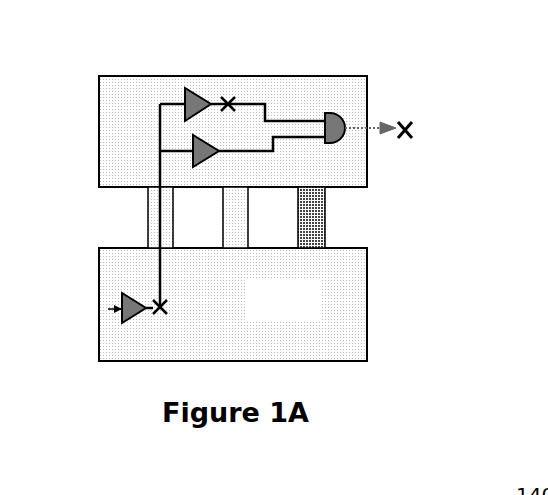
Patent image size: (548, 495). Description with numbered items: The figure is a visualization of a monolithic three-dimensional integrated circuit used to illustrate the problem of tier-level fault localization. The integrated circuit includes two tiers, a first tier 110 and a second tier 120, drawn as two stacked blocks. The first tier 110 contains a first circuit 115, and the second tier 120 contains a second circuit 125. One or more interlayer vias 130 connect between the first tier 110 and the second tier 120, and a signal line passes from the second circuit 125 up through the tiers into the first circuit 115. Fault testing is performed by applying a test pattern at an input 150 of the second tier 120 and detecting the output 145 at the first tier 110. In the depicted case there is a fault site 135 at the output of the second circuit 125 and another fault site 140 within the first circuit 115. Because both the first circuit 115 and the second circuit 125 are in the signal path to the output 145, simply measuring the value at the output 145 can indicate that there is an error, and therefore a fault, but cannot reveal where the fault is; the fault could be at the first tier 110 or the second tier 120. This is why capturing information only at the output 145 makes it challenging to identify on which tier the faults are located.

The first tier 110 is at (99, 128).
The first circuit 115 is at (327, 113).
The second tier 120 is at (233, 304).
The second circuit 125 is at (120, 296).
The interlayer vias 130 is at (148, 216).
The fault site 135 is at (165, 298).
The fault site 140 is at (232, 102).
The output 145 is at (420, 128).
The input 150 is at (108, 309).